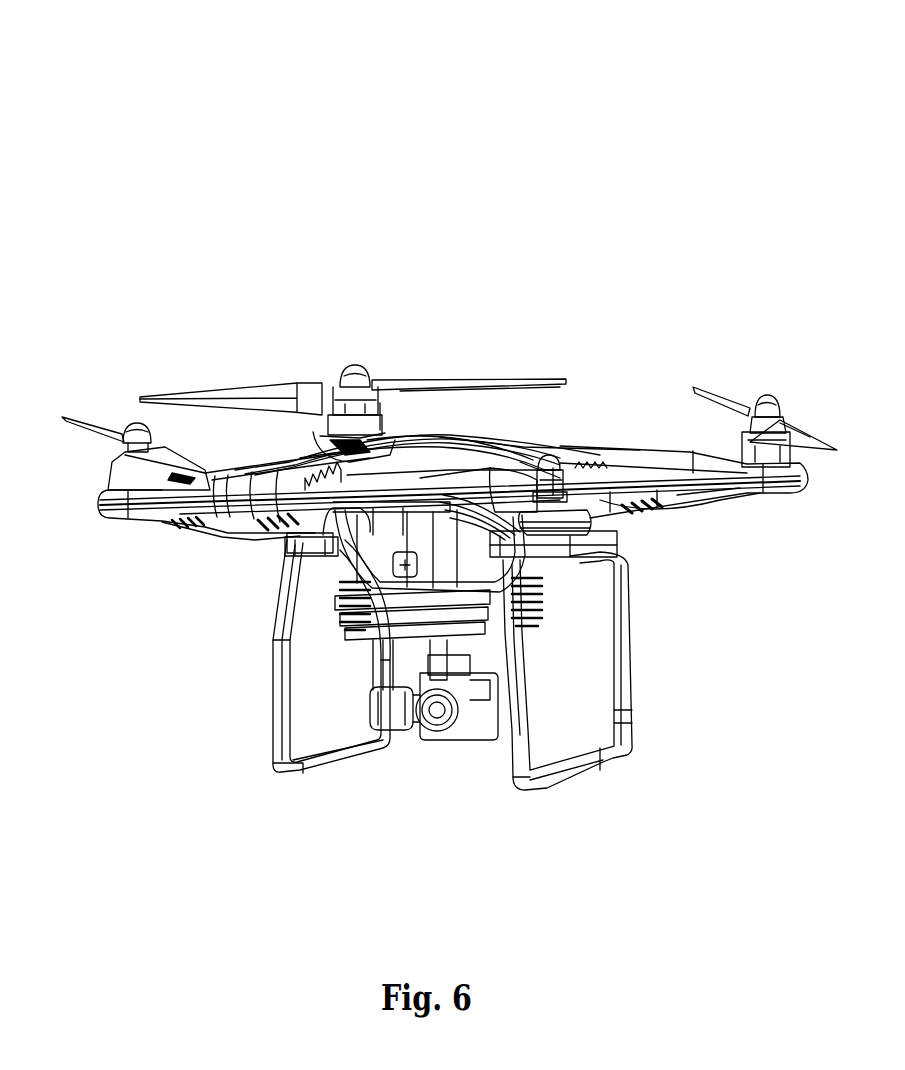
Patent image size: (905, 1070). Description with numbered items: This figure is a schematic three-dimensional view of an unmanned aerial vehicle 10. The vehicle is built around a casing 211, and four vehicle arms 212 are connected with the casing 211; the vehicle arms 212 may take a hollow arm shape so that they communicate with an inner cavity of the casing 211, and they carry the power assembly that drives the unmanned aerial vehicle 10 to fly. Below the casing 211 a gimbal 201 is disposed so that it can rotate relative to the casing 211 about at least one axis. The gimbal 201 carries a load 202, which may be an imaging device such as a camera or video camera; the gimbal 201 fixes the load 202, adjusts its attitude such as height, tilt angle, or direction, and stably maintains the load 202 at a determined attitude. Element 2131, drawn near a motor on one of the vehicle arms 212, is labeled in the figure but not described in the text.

The unmanned aerial vehicle 10 is at (518, 135).
The casing 211 is at (527, 457).
The vehicle arms 212 is at (673, 462).
The motor mount 2131 is at (370, 421).
The gimbal 201 is at (290, 603).
The load 202 is at (481, 745).